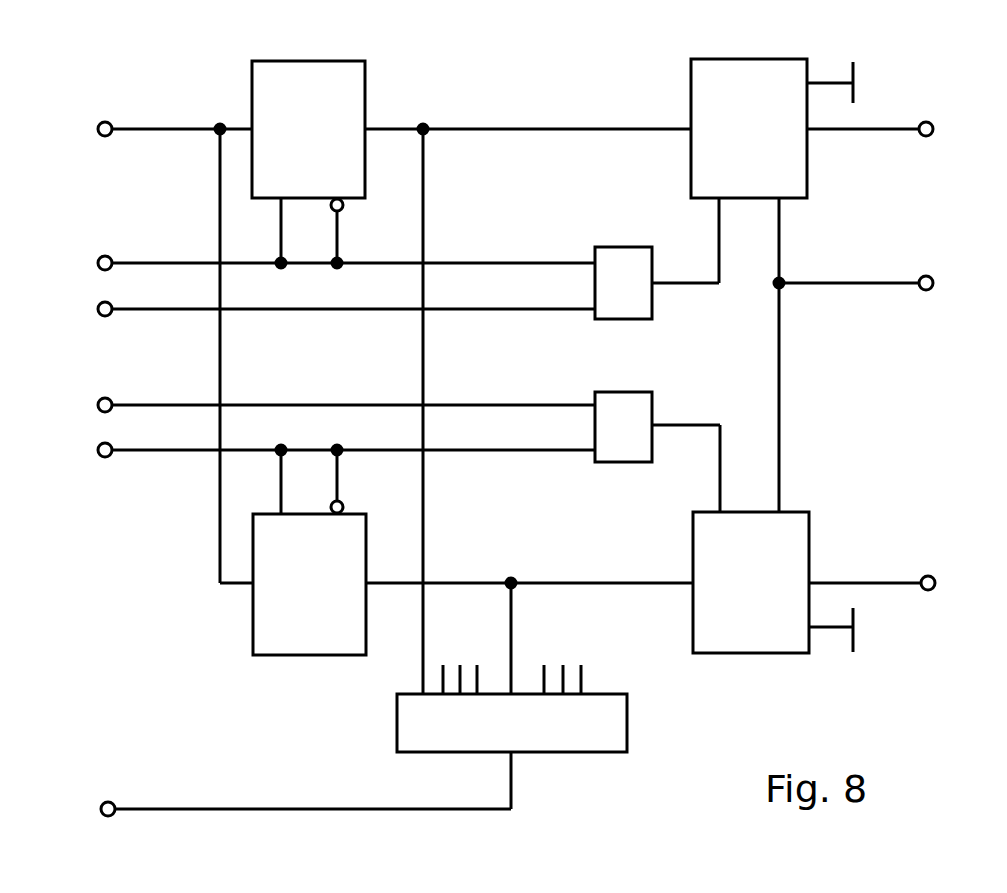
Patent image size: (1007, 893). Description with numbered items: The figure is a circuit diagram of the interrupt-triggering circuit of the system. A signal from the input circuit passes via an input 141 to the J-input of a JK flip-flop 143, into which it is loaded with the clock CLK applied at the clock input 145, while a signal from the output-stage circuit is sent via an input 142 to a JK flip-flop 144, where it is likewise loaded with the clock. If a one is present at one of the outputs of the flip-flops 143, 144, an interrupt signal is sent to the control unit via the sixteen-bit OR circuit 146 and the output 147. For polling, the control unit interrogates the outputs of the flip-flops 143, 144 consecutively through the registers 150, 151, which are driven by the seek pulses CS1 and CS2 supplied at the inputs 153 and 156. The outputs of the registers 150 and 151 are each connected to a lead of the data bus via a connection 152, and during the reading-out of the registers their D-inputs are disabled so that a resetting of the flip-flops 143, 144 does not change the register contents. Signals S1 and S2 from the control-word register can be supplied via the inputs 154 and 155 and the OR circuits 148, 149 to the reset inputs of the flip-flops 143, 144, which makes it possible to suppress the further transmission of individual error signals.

The input 141 is at (675, 117).
The input 142 is at (677, 573).
The JK flip-flop 143 is at (772, 269).
The JK flip-flop 144 is at (773, 567).
The clock input 145 is at (880, 274).
The 16-bit OR circuit 146 is at (539, 438).
The output 147 is at (279, 787).
The OR circuit 148 is at (657, 267).
The OR circuit 149 is at (657, 436).
The register 150 is at (308, 146).
The register 151 is at (327, 552).
The connection 152 is at (150, 340).
The input 153 is at (321, 254).
The input 154 is at (321, 301).
The input 155 is at (321, 396).
The input 156 is at (321, 442).